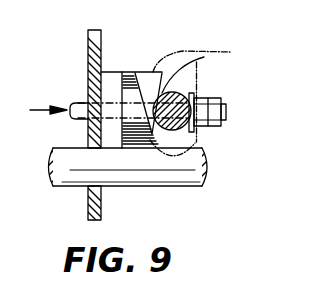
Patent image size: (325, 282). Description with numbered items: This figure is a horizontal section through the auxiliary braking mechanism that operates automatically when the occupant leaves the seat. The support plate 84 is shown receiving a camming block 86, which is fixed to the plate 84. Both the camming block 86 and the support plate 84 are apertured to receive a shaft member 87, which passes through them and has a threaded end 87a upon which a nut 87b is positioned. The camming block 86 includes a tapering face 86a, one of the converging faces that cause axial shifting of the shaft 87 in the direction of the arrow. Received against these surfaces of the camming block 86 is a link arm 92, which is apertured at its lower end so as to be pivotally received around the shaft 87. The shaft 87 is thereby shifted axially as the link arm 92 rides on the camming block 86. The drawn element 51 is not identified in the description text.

The shaft 51 is at (208, 182).
The support plate 84 is at (87, 50).
The camming block 86 is at (132, 73).
The tapering face 86a is at (143, 72).
The shaft member 87 is at (75, 103).
The threaded end 87a is at (226, 110).
The nut 87b is at (206, 130).
The link arm 92 is at (183, 52).